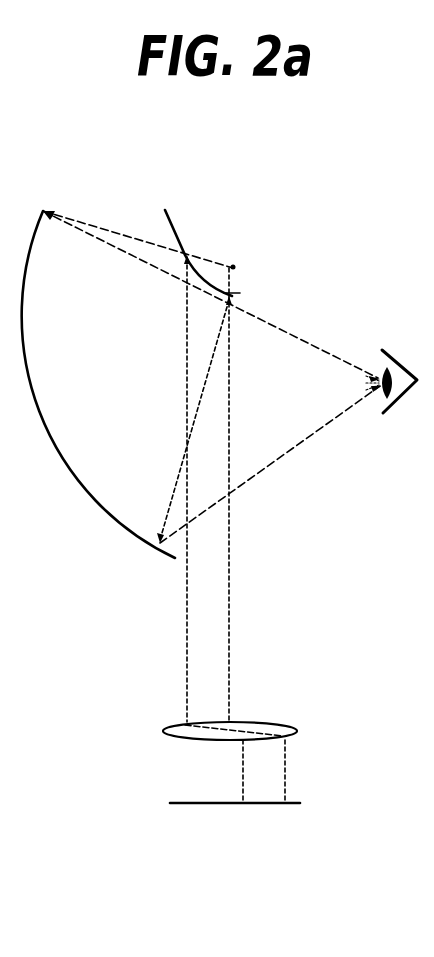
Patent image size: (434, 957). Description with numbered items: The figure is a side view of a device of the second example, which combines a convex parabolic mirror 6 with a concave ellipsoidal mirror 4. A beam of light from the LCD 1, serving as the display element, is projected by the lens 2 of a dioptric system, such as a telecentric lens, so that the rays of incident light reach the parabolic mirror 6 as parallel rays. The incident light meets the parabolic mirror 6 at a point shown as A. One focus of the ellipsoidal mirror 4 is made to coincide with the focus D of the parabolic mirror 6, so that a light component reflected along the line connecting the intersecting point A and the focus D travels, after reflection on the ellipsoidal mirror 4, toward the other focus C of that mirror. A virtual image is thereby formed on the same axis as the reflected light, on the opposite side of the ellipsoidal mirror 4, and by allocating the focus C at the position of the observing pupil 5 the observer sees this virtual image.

The LCD 1 is at (207, 802).
The lens 2 is at (263, 722).
The concave ellipsoidal mirror 4 is at (33, 382).
The observing pupil 5 is at (380, 365).
The convex parabolic mirror 6 is at (183, 253).
The point A on half mirror A is at (186, 258).
The focus C is at (363, 390).
The focus D is at (233, 267).